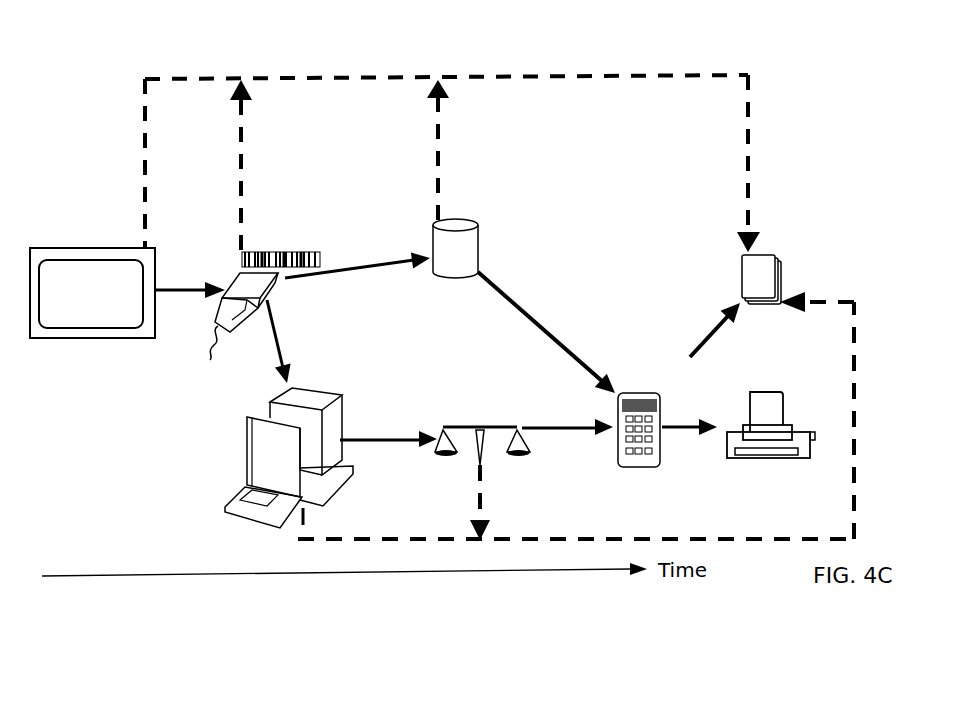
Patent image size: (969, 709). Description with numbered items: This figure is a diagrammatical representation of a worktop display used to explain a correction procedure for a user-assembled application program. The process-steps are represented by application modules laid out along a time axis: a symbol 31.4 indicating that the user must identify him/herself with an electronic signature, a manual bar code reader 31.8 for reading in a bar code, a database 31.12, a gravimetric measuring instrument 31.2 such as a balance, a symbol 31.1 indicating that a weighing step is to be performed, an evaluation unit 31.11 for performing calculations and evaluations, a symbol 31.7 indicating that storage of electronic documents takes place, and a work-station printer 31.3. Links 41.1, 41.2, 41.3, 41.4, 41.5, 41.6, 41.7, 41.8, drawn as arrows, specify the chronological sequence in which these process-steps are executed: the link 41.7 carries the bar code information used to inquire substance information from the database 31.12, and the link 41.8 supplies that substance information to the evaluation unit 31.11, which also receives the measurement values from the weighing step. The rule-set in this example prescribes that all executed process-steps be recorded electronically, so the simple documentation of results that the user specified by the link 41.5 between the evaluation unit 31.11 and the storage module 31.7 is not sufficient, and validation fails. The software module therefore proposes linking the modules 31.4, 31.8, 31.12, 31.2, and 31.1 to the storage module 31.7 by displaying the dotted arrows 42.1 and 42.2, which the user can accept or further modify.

The weighing step symbol 31.1 is at (470, 425).
The gravimetric measuring instrument 31.2 is at (255, 452).
The work-station printer 31.3 is at (800, 428).
The user identification symbol 31.4 is at (100, 255).
The electronic document storage symbol 31.7 is at (760, 258).
The manual bar code reader 31.8 is at (262, 250).
The evaluation unit 31.11 is at (620, 395).
The database 31.12 is at (441, 228).
The link 41.1 is at (178, 285).
The link 41.2 is at (285, 365).
The link 41.3 is at (373, 435).
The link 41.4 is at (575, 435).
The link 41.5 is at (690, 355).
The link 41.6 is at (690, 432).
The link 41.7 is at (340, 270).
The link 41.8 is at (543, 330).
The dotted arrow 42.1 is at (574, 74).
The dotted arrow 42.2 is at (512, 542).